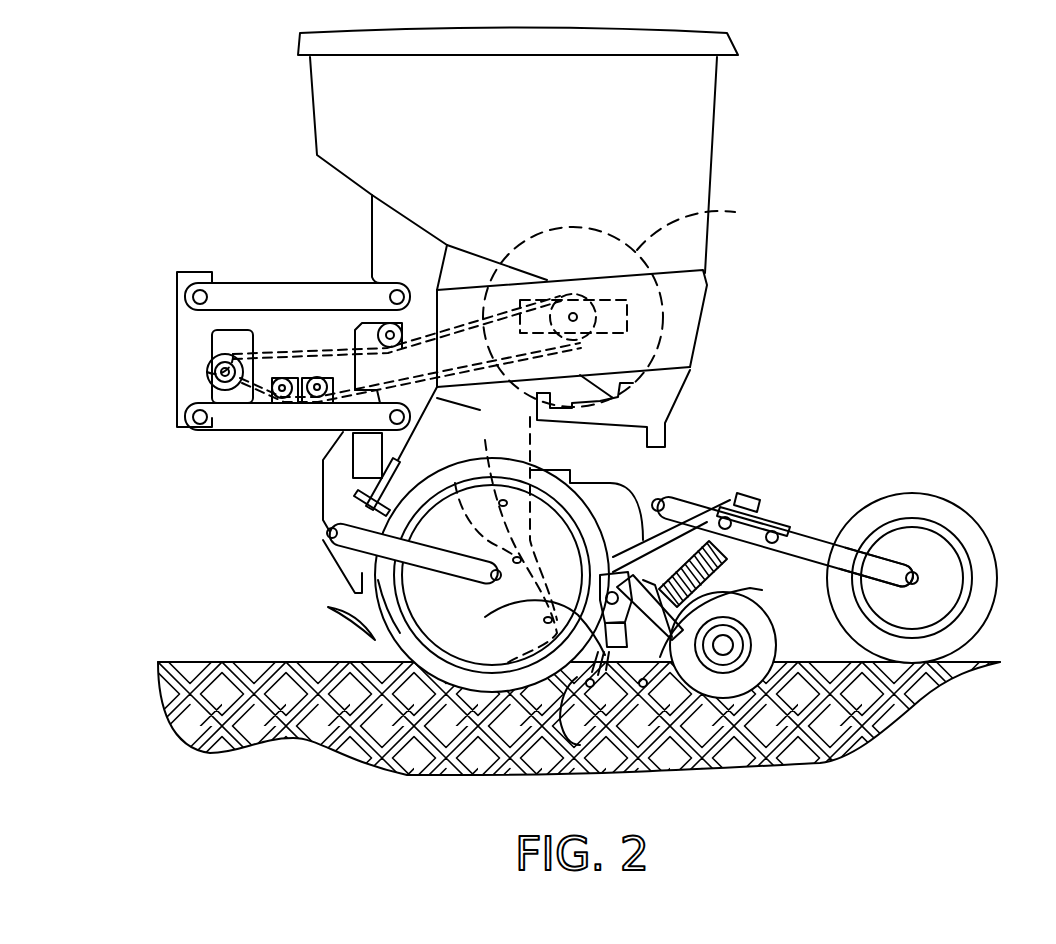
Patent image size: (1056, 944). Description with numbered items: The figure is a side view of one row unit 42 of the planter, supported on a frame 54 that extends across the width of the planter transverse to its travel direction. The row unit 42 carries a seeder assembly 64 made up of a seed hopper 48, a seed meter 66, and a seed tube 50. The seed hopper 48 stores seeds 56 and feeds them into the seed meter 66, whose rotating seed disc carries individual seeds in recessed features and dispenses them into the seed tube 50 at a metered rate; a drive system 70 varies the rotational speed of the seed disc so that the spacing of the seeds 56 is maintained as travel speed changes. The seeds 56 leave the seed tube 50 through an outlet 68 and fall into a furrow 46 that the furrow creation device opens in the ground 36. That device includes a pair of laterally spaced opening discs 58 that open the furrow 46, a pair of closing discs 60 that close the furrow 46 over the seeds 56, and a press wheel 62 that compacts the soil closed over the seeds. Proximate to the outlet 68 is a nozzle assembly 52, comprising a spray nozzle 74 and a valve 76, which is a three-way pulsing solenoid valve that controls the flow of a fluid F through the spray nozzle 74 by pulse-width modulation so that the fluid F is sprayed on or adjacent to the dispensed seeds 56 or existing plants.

The ground 36 is at (190, 662).
The row unit 42 is at (938, 93).
The furrow 46 is at (577, 677).
The seed hopper 48 is at (717, 120).
The seed tube 50 is at (533, 442).
The nozzle assembly 52 is at (653, 573).
The frame 54 is at (242, 282).
The seeds 56 is at (455, 483).
The opening discs 58 is at (345, 607).
The closing discs 60 is at (762, 590).
The press wheel 62 is at (950, 500).
The seeder assembly 64 is at (279, 150).
The seed meter 66 is at (735, 212).
The outlet 68 is at (507, 663).
The drive system 70 is at (302, 282).
The spray nozzle 74 is at (485, 617).
The valve 76 is at (664, 558).
The fluid F is at (583, 677).